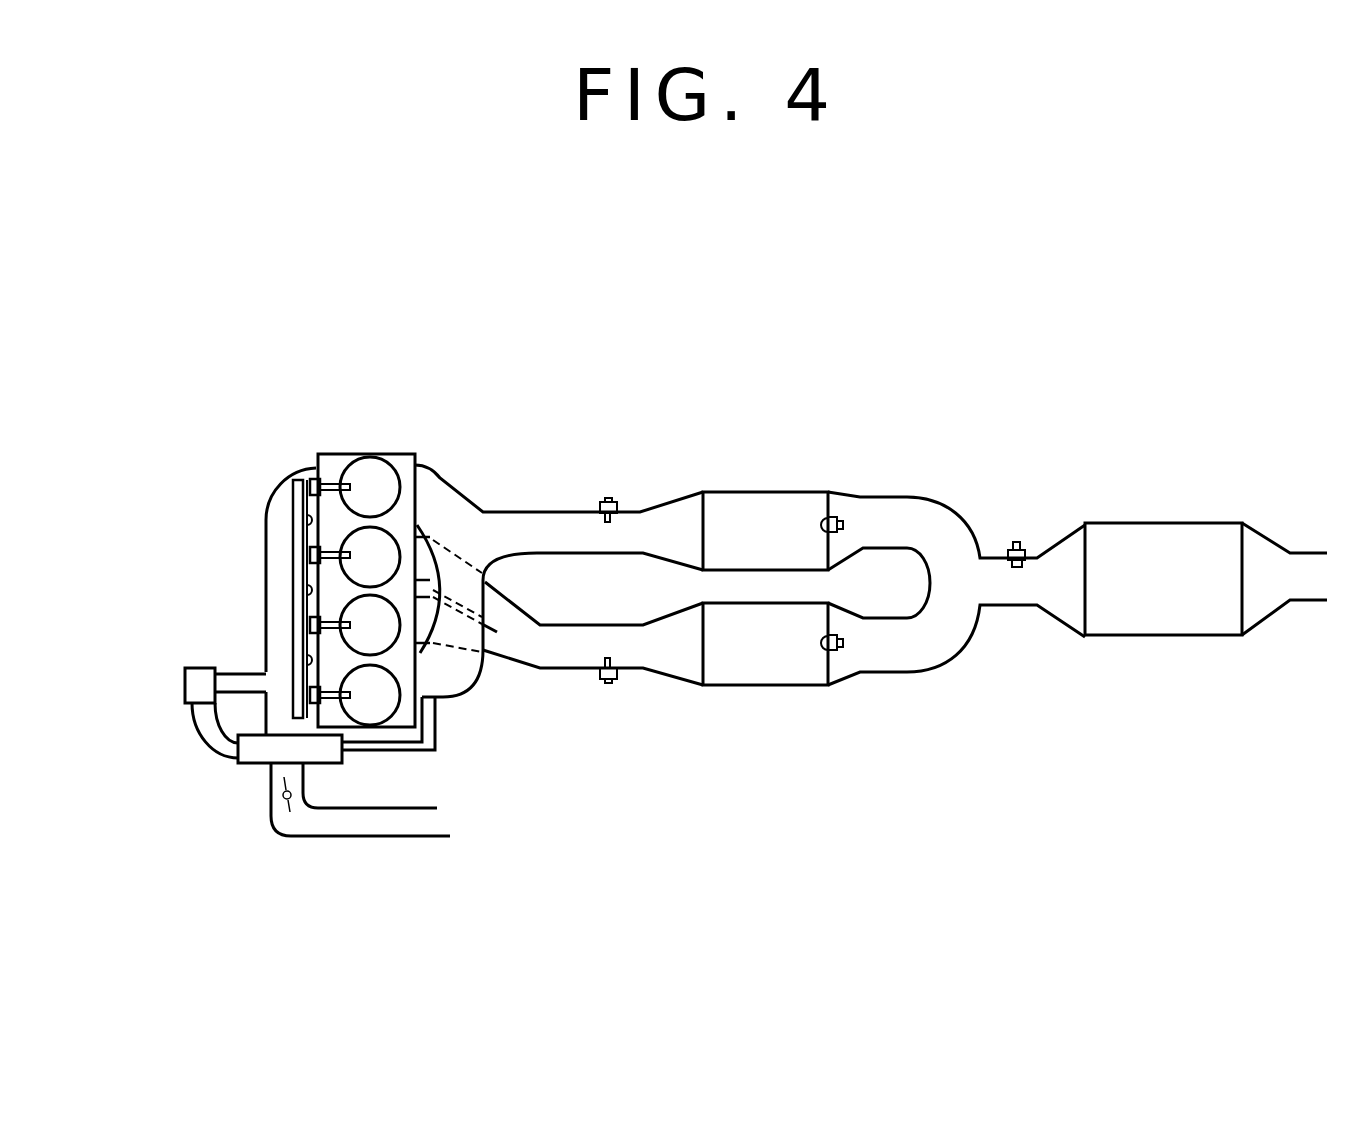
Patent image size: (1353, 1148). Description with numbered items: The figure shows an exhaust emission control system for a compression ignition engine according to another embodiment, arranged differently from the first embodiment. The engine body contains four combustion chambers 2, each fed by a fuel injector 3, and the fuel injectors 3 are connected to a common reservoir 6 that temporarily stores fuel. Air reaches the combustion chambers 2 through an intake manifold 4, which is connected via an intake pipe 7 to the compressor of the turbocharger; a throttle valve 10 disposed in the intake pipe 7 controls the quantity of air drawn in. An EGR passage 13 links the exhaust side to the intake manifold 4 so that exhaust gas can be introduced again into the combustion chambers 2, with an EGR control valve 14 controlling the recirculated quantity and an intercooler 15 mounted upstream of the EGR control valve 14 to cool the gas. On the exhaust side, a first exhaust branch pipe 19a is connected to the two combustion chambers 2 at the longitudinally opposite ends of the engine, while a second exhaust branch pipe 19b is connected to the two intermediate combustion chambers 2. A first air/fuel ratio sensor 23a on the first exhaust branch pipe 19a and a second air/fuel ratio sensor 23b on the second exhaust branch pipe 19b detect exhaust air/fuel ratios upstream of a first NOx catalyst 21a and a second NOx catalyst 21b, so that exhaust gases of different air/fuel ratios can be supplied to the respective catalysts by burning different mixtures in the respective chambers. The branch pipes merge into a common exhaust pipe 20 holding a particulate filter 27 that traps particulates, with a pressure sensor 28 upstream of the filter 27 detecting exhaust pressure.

The combustion chamber 2 is at (380, 504).
The fuel injector 3 is at (310, 693).
The intake manifold 4 is at (280, 503).
The common reservoir 6 is at (300, 480).
The intake pipe 7 is at (353, 823).
The throttle valve 10 is at (282, 805).
The EGR passage 13 is at (203, 722).
The EGR control valve 14 is at (202, 667).
The intercooler 15 is at (259, 750).
The first exhaust branch pipe 19a is at (560, 535).
The second exhaust branch pipe 19b is at (553, 650).
The common exhaust pipe 20 is at (993, 573).
The first NOx catalyst 21a is at (780, 507).
The second NOx catalyst 21b is at (773, 665).
The first air/fuel ratio sensor 23a is at (608, 498).
The second air/fuel ratio sensor 23b is at (610, 683).
The particulate filter 27 is at (1157, 547).
The pressure sensor 28 is at (1020, 540).